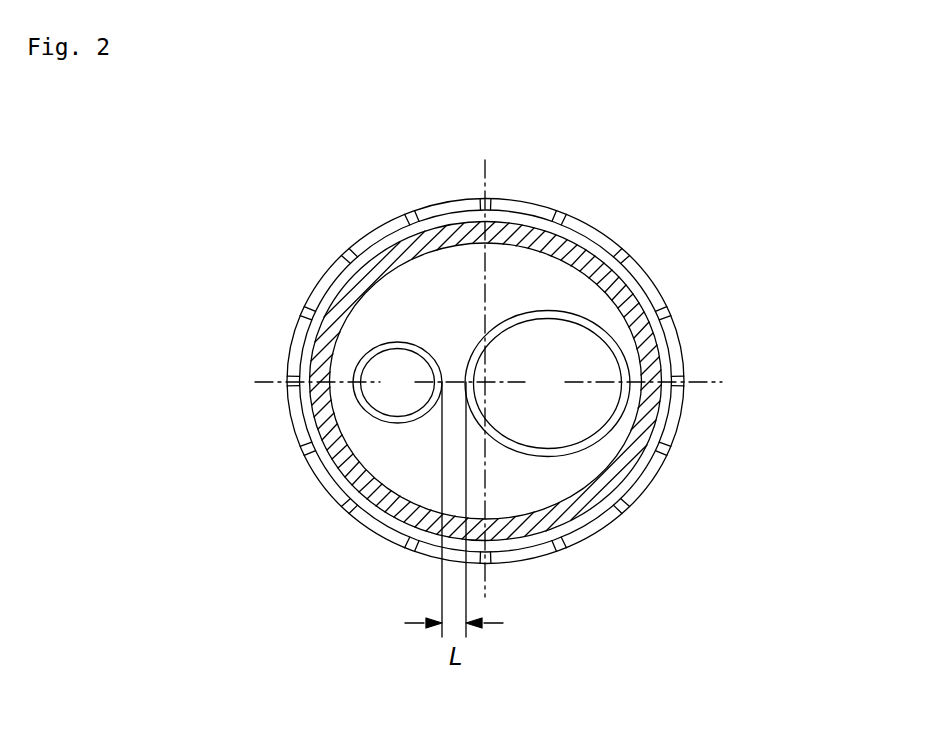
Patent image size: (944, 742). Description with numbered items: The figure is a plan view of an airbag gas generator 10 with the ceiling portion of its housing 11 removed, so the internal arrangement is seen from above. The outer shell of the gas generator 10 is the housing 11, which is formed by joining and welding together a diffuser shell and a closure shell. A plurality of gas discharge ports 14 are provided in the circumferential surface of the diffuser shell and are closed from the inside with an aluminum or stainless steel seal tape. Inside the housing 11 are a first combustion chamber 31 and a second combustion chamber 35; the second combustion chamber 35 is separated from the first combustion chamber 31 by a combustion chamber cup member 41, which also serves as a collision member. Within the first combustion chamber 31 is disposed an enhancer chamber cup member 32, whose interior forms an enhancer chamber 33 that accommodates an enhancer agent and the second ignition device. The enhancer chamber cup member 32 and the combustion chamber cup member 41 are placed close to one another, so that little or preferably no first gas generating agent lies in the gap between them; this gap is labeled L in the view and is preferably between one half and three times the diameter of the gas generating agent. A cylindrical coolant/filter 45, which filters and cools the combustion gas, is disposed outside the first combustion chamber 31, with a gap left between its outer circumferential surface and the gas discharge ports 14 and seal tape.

The gas generator 10 is at (530, 195).
The housing 11 is at (610, 236).
The gas discharge ports 14 is at (348, 257).
The first combustion chamber 31 is at (457, 308).
The enhancer chamber cup member 32 is at (365, 412).
The enhancer chamber 33 is at (414, 398).
The second combustion chamber 35 is at (562, 398).
The combustion chamber cup member 41 is at (622, 358).
The coolant/filter 45 is at (576, 511).